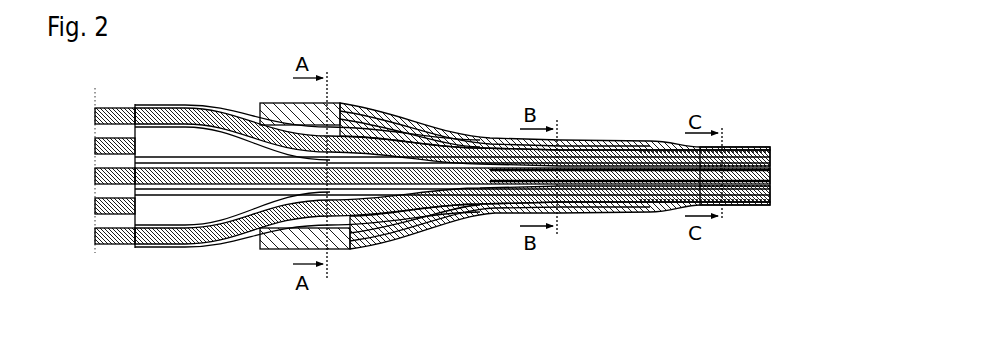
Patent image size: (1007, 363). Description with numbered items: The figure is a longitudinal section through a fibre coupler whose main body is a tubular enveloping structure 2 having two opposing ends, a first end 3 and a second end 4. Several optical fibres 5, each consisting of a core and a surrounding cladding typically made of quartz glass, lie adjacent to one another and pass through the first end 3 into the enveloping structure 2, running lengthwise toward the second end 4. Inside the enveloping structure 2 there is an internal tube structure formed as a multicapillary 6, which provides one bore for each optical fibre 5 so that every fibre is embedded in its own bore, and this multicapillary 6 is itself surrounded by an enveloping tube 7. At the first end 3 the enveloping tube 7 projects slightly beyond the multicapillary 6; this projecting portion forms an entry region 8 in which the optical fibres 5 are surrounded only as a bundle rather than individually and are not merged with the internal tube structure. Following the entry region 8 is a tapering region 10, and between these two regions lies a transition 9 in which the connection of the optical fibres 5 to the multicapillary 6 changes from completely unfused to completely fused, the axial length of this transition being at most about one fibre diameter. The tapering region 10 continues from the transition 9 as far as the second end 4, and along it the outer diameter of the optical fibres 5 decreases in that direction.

The tubular enveloping structure 2 is at (555, 152).
The first end 3 is at (257, 112).
The second end 4 is at (748, 143).
The optical fibres 5 is at (158, 183).
The multicapillary 6 is at (380, 132).
The enveloping tube 7 is at (418, 130).
The entry region 8 is at (259, 103).
The transition 9 is at (352, 249).
The tapering region 10 is at (468, 134).